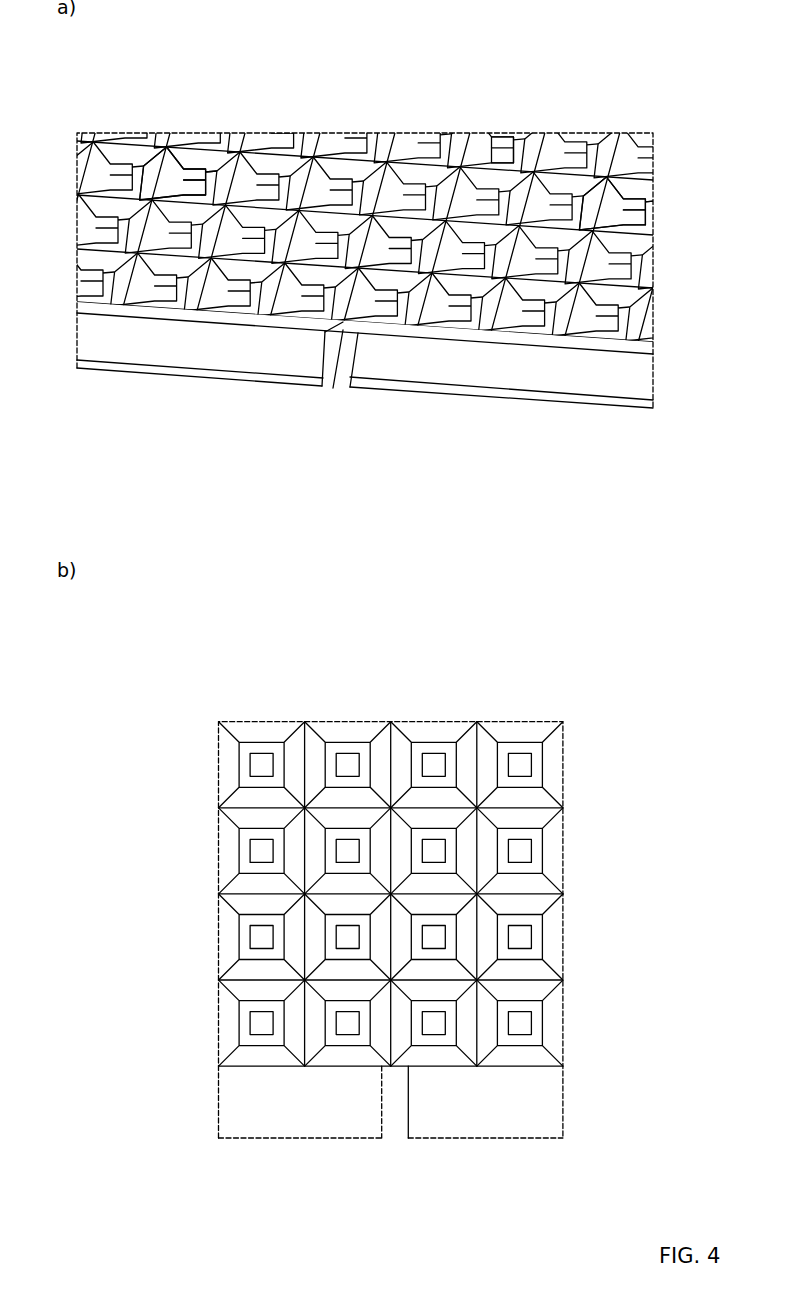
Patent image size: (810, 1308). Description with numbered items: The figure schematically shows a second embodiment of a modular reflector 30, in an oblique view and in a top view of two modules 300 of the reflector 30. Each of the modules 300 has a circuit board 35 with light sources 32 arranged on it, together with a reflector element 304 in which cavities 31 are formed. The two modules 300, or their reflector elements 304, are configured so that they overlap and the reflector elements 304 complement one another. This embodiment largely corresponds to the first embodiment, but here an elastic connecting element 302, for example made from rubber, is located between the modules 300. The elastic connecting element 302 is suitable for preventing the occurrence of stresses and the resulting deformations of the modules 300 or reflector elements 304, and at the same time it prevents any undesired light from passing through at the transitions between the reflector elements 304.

The modular reflector 30 is at (358, 94).
The cavities 31 is at (658, 250).
The light sources 32 is at (497, 143).
The elastic connecting element 302 is at (323, 352).
The reflector element 304 is at (203, 152).
The circuit board 35 is at (158, 368).
The modules 300 is at (213, 378).